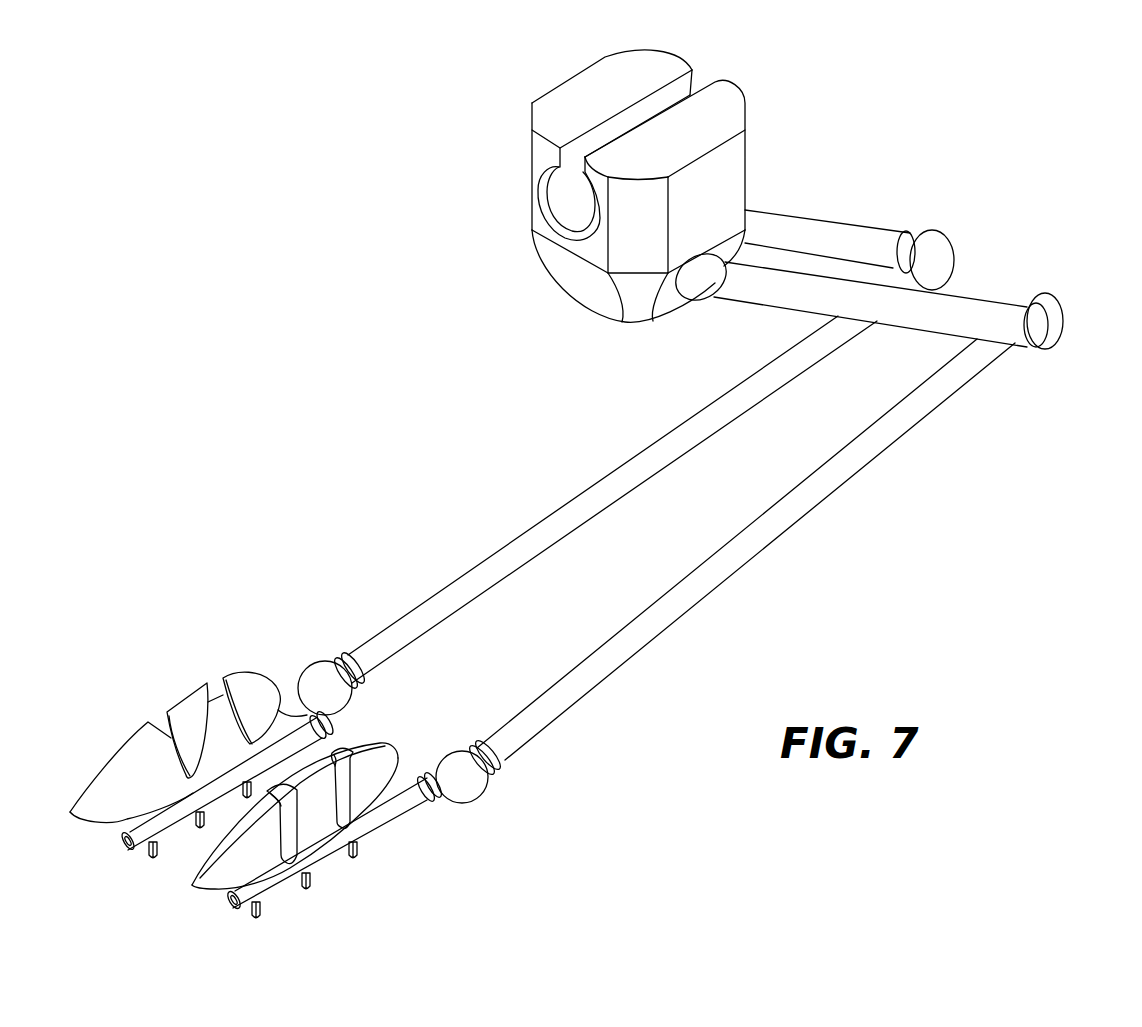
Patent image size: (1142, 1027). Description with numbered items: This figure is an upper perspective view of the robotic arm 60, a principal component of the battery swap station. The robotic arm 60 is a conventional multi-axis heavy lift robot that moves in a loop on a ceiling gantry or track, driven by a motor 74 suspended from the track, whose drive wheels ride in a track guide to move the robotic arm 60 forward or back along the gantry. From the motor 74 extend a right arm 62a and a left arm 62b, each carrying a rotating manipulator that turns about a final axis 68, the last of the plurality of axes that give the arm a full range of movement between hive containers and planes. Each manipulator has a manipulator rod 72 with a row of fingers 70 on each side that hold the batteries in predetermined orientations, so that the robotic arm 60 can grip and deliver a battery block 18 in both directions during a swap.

The robotic arm 60 is at (1052, 124).
The motor 74 is at (667, 60).
The right arm 62a is at (633, 468).
The left arm 62b is at (937, 395).
The final axis 68 is at (358, 665).
The manipulator rod 72 is at (122, 841).
The battery block 18 is at (193, 705).
The fingers 70 is at (194, 824).